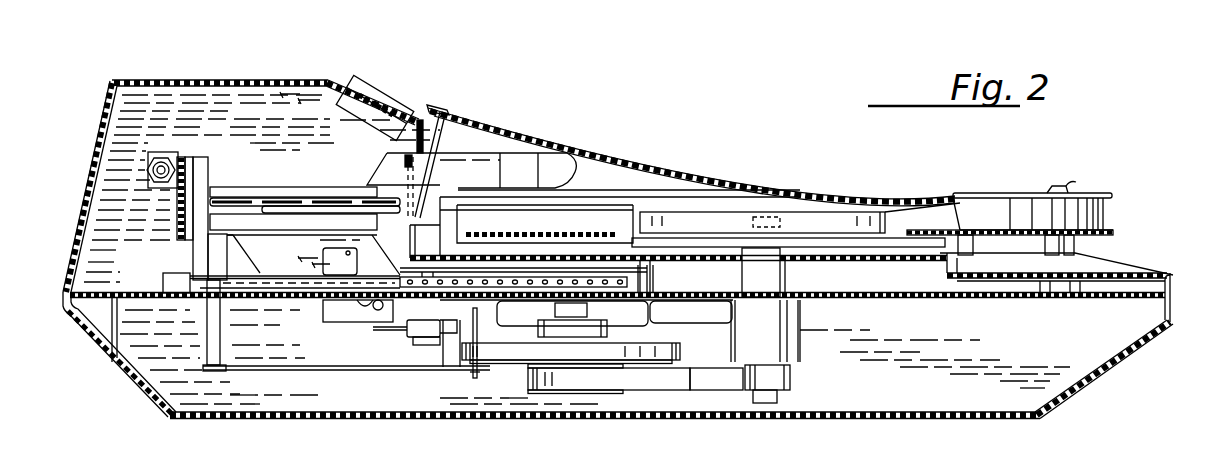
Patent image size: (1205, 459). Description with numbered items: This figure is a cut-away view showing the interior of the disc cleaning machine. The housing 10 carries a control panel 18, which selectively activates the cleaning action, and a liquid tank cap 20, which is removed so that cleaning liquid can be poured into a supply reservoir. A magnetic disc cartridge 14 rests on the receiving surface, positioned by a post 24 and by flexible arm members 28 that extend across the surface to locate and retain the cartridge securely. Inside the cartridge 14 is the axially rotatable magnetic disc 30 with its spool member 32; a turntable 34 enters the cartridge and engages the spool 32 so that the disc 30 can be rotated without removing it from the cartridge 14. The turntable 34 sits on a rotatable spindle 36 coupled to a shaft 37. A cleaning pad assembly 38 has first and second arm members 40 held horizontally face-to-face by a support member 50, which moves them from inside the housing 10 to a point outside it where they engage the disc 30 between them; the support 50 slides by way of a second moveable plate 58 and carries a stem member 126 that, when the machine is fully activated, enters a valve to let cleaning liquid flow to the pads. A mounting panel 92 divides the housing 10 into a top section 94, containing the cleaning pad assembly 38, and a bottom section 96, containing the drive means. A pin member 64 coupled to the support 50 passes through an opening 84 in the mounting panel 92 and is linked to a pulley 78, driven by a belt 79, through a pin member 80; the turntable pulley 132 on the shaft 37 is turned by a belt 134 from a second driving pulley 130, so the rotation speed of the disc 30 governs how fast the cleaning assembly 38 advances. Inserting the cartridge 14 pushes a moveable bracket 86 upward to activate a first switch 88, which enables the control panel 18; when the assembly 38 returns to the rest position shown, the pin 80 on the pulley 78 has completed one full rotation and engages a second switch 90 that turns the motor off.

The housing 10 is at (1175, 339).
The magnetic disc cartridge 14 is at (977, 230).
The control panel 18 is at (360, 84).
The liquid tank cap 20 is at (165, 152).
The post 24 is at (1053, 187).
The flexible arm members 28 is at (478, 165).
The magnetic disc 30 is at (769, 205).
The spool member 32 is at (826, 214).
The turntable 34 is at (890, 241).
The spindle 36 is at (753, 214).
The shaft 37 is at (783, 276).
The cleaning pad assembly 38 is at (294, 190).
The arm members 40 is at (330, 187).
The support member 50 is at (207, 172).
The second moveable plate 58 is at (327, 320).
The pin member 64 is at (212, 350).
The pulley 78 is at (672, 373).
The belt 79 is at (680, 345).
The pin member 80 is at (475, 379).
The opening 84 is at (298, 371).
The moveable bracket 86 is at (418, 120).
The first switch 88 is at (300, 278).
The second switch 90 is at (445, 357).
The mounting panel 92 is at (150, 287).
The top section 94 is at (128, 74).
The bottom section 96 is at (157, 371).
The stem member 126 is at (200, 157).
The second driving pulley 130 is at (598, 397).
The turntable pulley 132 is at (790, 396).
The belt 134 is at (697, 381).